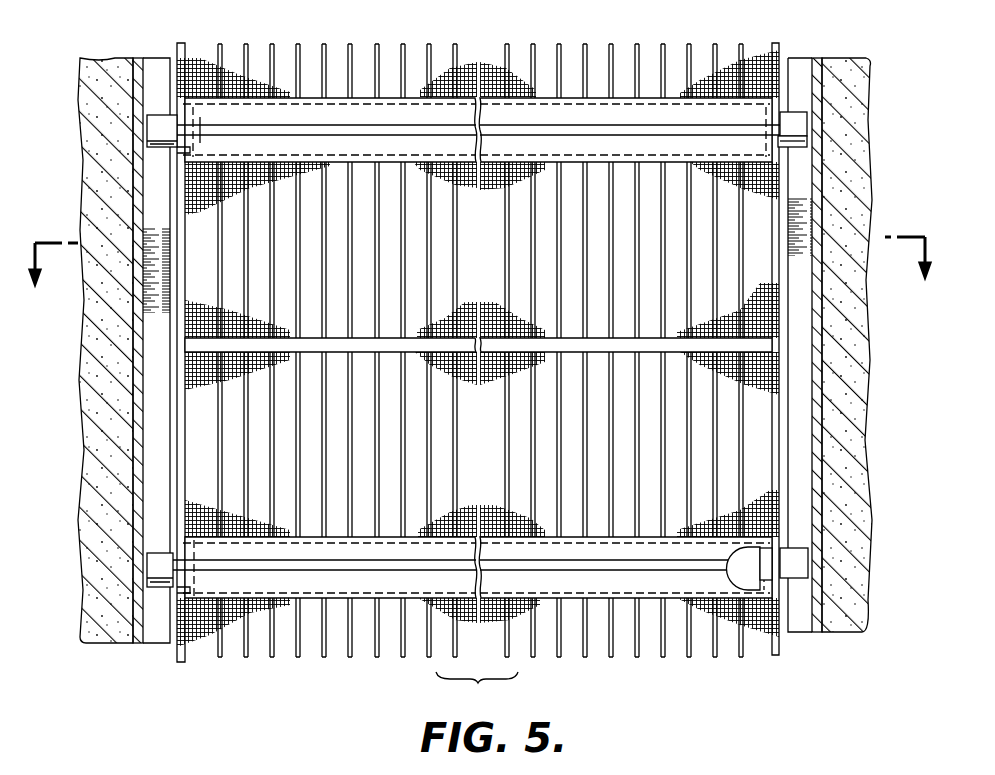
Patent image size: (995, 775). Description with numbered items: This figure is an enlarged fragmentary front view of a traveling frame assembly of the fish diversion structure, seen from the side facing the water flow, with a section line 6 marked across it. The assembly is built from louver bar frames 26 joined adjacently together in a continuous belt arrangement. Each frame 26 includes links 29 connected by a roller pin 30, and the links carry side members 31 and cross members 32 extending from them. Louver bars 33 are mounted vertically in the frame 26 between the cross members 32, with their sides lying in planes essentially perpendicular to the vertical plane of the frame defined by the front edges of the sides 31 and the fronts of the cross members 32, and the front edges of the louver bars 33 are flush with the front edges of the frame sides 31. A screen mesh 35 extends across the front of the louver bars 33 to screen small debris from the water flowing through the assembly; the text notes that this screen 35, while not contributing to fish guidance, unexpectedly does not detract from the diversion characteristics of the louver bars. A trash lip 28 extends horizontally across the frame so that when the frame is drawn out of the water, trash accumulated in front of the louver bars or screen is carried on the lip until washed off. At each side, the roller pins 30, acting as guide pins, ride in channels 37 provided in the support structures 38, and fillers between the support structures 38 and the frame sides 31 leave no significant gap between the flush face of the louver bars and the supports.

The section line 6- 6 is at (475, 287).
The louver bar frame 26 is at (170, 388).
The trash lip 28 is at (767, 338).
The link 29 is at (182, 152).
The roller pin 30 is at (160, 128).
The side member 31 is at (190, 218).
The cross member 32 is at (572, 142).
The louver bar 33 is at (397, 188).
The screen mesh 35 is at (207, 623).
The channel 37 is at (799, 618).
The support structure 38 is at (860, 391).